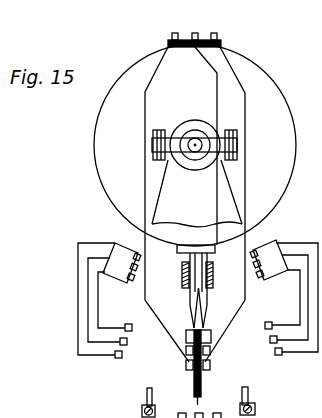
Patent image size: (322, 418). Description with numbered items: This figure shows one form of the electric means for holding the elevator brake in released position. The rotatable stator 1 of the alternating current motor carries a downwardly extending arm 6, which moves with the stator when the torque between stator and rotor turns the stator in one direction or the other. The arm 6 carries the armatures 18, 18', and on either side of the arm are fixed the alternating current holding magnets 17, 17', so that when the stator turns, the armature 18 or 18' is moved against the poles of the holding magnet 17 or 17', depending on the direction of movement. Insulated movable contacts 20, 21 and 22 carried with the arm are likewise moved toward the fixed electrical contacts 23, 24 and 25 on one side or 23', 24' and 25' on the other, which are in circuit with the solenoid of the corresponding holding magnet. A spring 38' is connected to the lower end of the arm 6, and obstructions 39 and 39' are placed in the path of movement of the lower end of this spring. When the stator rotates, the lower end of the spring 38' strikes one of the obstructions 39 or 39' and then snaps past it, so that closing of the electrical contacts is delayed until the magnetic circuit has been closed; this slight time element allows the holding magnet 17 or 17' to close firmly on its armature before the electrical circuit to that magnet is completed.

The stator 1 is at (263, 86).
The arm 6 is at (184, 258).
The holding magnet 17 is at (114, 253).
The holding magnet 17' is at (278, 246).
The armature 18 is at (172, 275).
The armature 18' is at (226, 275).
The movable contact 20 is at (186, 337).
The movable contact 21 is at (191, 360).
The movable contact 22 is at (193, 370).
The electrical contact 23 is at (129, 307).
The electrical contact 24 is at (123, 307).
The electrical contact 25 is at (118, 307).
The electrical contact 23' is at (265, 302).
The electrical contact 24' is at (269, 302).
The electrical contact 25' is at (274, 302).
The spring 38' is at (220, 383).
The obstruction 39 is at (129, 400).
The obstruction 39' is at (263, 398).